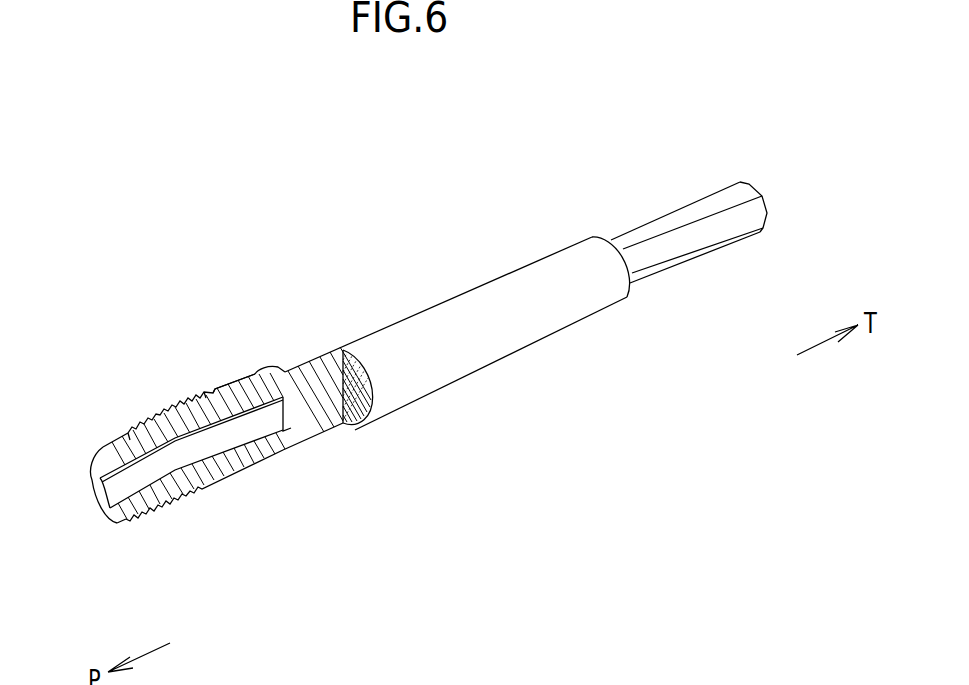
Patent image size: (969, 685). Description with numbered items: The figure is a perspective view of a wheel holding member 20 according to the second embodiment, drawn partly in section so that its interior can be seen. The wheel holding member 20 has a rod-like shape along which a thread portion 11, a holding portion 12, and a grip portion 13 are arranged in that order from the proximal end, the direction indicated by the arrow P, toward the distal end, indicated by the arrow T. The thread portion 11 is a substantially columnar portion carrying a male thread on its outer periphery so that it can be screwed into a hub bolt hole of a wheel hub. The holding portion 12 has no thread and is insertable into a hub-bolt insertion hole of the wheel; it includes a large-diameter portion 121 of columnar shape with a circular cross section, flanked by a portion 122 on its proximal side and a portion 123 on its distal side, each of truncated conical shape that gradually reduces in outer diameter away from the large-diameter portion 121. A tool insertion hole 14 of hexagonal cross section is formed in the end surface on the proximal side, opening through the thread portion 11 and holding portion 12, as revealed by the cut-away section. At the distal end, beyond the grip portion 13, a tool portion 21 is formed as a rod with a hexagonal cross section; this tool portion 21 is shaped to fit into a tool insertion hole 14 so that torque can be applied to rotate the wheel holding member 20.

The wheel holding member 20 is at (263, 217).
The tool portion 21 is at (673, 217).
The grip portion 13 is at (453, 302).
The holding portion 12 is at (272, 278).
The large-diameter portion 121 is at (240, 385).
The portion (proximal truncated conical portion) 122 is at (213, 395).
The portion (distal truncated conical portion) 123 is at (277, 370).
The thread portion 11 is at (135, 430).
The tool insertion hole 14 is at (205, 448).